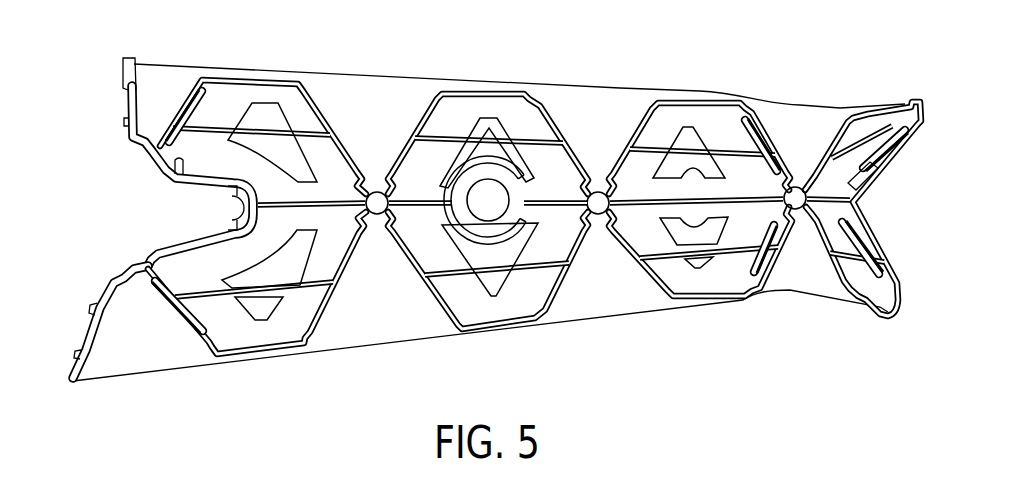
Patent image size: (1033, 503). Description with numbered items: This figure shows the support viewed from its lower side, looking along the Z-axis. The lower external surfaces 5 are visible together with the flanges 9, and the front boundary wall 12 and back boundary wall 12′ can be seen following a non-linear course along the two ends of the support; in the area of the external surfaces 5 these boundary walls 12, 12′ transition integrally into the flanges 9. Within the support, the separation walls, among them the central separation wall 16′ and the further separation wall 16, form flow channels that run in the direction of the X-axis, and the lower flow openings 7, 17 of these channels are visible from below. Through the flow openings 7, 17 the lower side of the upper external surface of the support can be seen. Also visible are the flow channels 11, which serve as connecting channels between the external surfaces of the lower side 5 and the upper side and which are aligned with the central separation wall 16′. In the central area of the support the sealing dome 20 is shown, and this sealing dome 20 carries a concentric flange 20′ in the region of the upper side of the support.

The lower external surface 5 is at (480, 245).
The lower flow opening 7 is at (228, 343).
The flange 9 is at (307, 335).
The flow channel 11 is at (377, 192).
The front boundary wall 12 is at (88, 325).
The back boundary wall 12′ is at (917, 126).
The separation wall 16 is at (743, 258).
The central separation wall 16′ is at (752, 194).
The lower flow opening 17 is at (200, 272).
The sealing dome 20 is at (531, 176).
The concentric flange 20′ is at (487, 172).